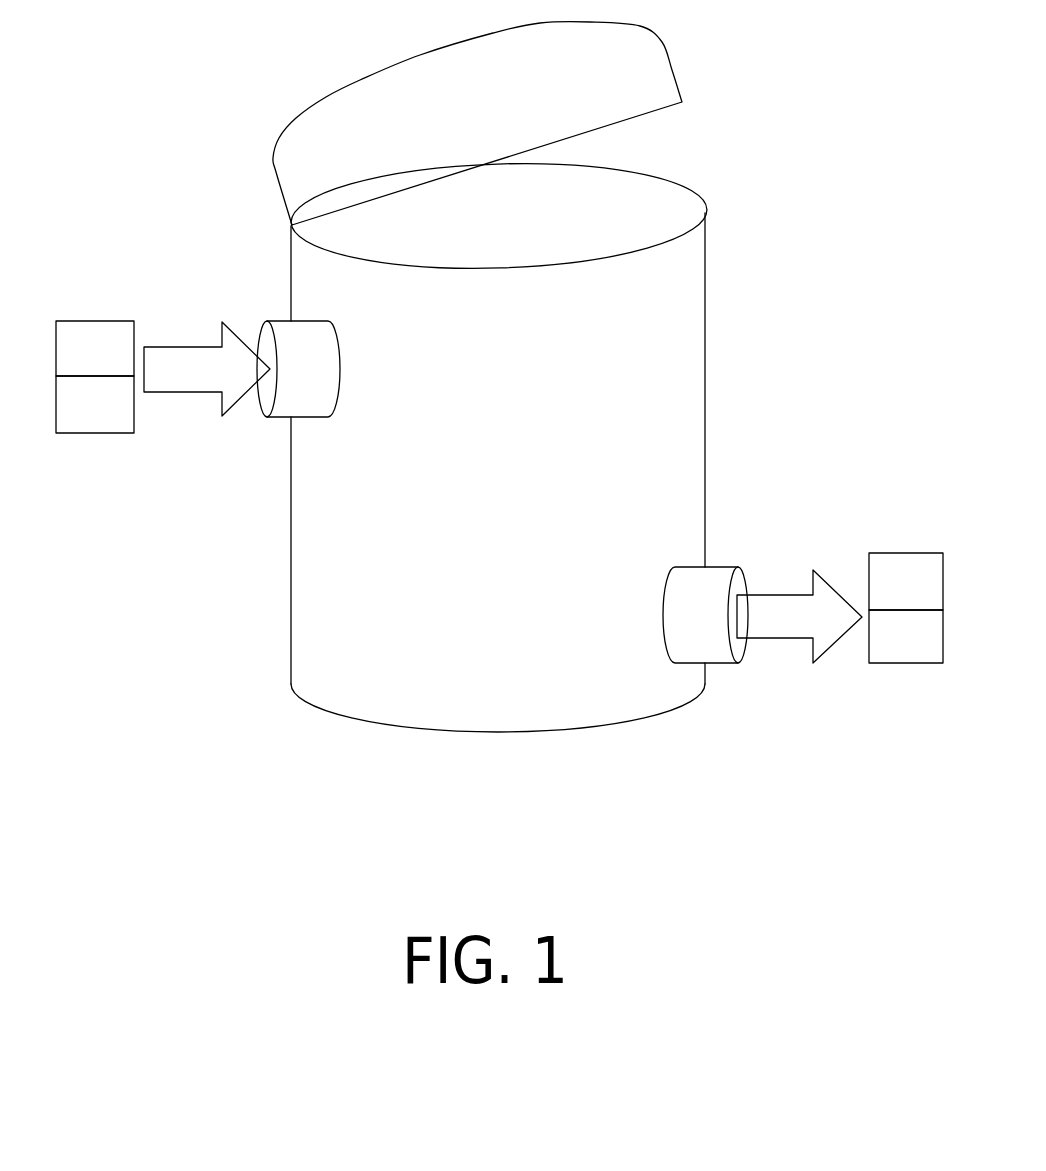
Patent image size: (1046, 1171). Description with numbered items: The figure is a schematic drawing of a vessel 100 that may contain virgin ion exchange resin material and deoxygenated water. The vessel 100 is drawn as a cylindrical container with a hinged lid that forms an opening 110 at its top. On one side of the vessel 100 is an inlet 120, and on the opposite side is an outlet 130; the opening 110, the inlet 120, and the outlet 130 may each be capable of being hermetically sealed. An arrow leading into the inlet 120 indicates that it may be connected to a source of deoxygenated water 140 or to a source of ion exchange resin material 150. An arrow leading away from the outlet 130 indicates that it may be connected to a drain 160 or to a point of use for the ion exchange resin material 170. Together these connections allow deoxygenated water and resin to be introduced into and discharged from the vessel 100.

The vessel 100 is at (474, 450).
The opening 110 is at (627, 191).
The inlet 120 is at (310, 386).
The outlet 130 is at (705, 633).
The source of deoxygenated water 140 is at (95, 348).
The source of ion exchange resin material 150 is at (95, 404).
The drain 160 is at (906, 581).
The point of use for the ion exchange resin material 170 is at (906, 636).